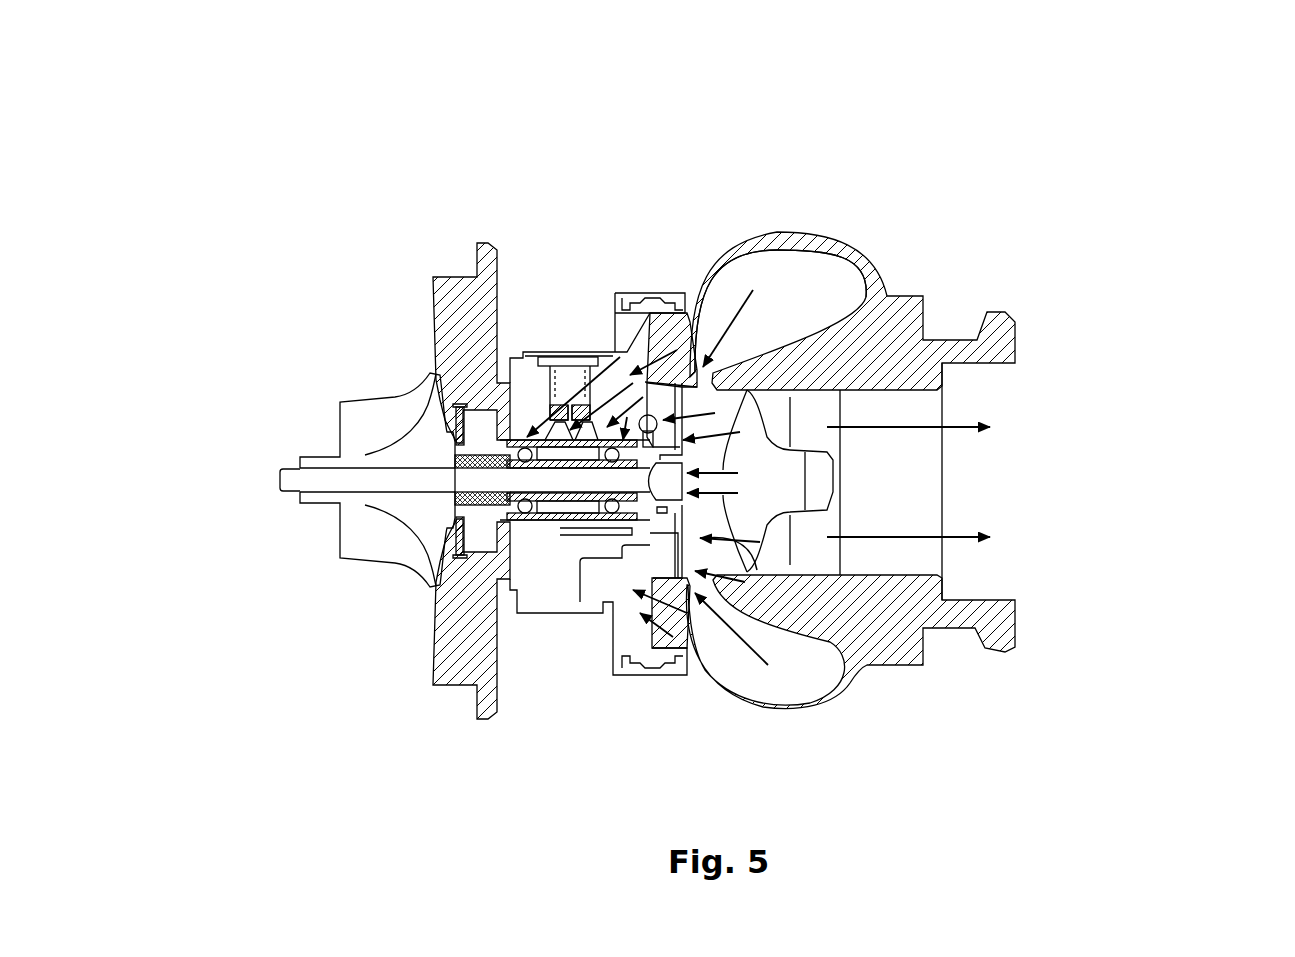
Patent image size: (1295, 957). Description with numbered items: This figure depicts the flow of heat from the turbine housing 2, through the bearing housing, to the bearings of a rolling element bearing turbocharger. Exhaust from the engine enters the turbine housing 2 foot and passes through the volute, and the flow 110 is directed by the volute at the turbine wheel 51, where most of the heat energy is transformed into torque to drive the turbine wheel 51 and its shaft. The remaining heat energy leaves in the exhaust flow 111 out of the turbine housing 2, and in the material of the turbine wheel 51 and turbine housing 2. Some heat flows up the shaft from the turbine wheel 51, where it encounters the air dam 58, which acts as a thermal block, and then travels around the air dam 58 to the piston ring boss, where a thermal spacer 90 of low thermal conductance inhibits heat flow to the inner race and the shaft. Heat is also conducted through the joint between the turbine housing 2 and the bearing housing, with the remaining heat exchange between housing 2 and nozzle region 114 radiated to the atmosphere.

The turbine housing 2 is at (867, 367).
The turbine wheel 51 is at (805, 472).
The air dam 58 is at (673, 480).
The thermal spacer 90 is at (650, 503).
The exhaust flow 110 is at (730, 320).
The exhaust flow out of the turbine housing 111 is at (923, 427).
The turbine wheel 114 is at (745, 402).